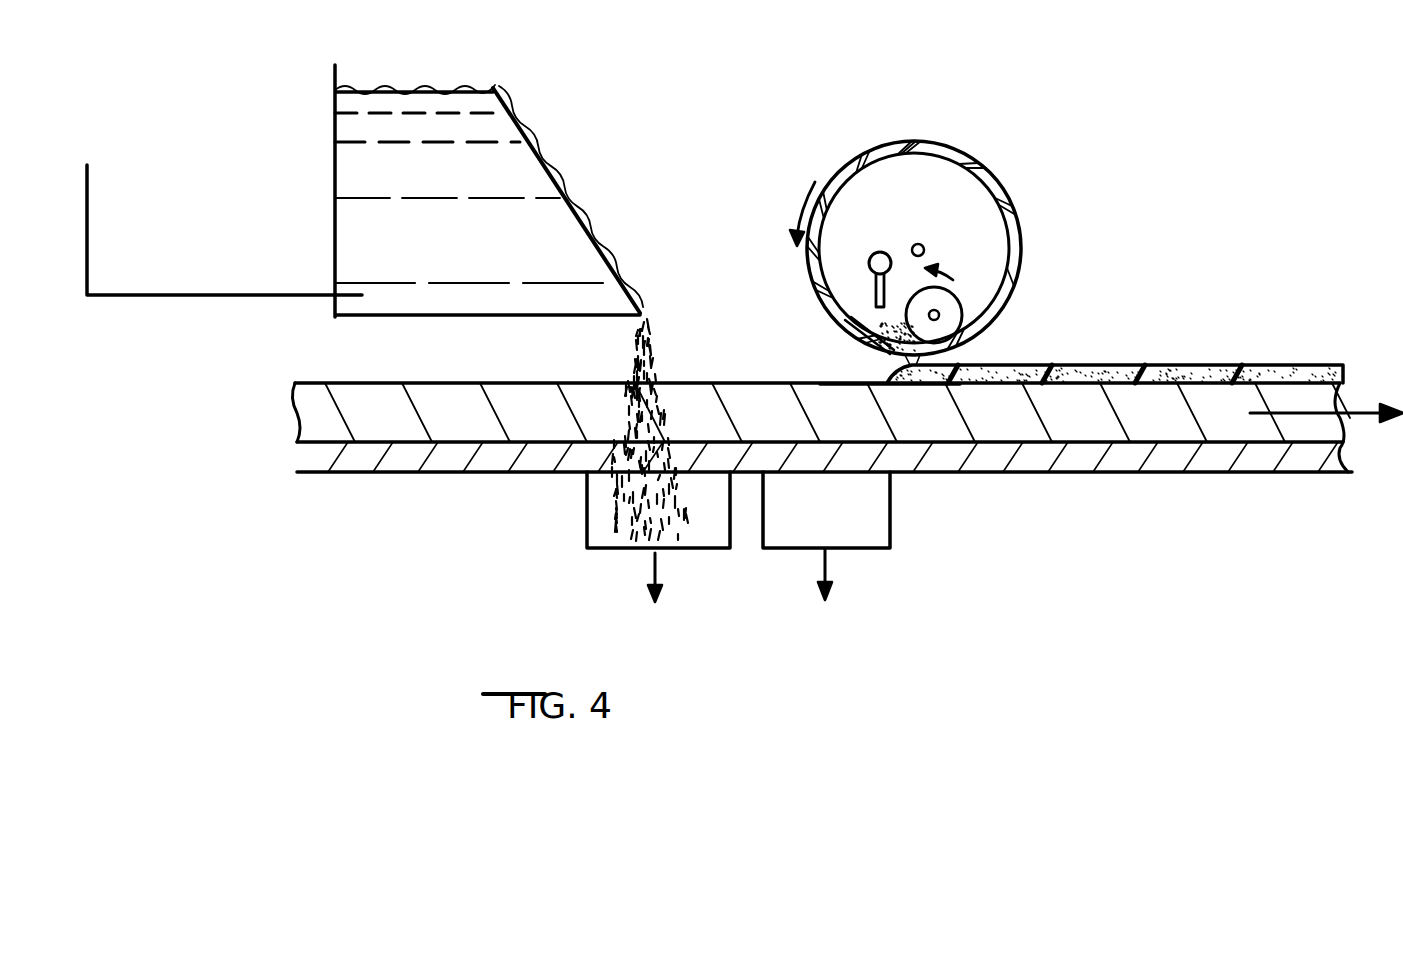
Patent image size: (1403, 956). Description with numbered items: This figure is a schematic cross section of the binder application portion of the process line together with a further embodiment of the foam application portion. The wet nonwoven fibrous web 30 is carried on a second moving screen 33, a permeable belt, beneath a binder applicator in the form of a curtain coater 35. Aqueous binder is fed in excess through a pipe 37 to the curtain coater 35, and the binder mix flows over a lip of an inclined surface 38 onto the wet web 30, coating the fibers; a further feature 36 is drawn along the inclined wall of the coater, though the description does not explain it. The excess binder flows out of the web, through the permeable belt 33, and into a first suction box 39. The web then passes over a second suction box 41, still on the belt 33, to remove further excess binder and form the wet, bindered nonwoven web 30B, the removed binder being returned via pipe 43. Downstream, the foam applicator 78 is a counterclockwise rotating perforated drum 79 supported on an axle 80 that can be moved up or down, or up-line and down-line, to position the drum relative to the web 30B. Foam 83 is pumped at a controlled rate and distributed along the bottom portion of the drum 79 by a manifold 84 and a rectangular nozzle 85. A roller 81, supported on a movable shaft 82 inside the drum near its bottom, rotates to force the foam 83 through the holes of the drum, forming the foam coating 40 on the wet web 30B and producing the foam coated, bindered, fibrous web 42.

The wet nonwoven fibrous web 30 is at (318, 397).
The wet, bindered nonwoven web 30B is at (900, 402).
The second moving screen 33 is at (360, 474).
The curtain coater 35 is at (340, 165).
The wavy liner of hopper wall 36 is at (570, 178).
The pipe 37 is at (87, 200).
The inclined surface 38 is at (562, 232).
The first suction box 39 is at (598, 527).
The foam coating 40 is at (1150, 365).
The second suction box 41 is at (795, 523).
The foam coated, bindered, fibrous web 42 is at (1265, 365).
The pipe 43 is at (650, 565).
The foam applicator 78 is at (912, 211).
The perforated drum 79 is at (1017, 207).
The axle 80 is at (922, 246).
The roller 81 is at (1000, 303).
The movable shaft 82 is at (938, 311).
The foam 83 is at (857, 335).
The manifold 84 is at (869, 263).
The rectangular nozzle 85 is at (892, 292).